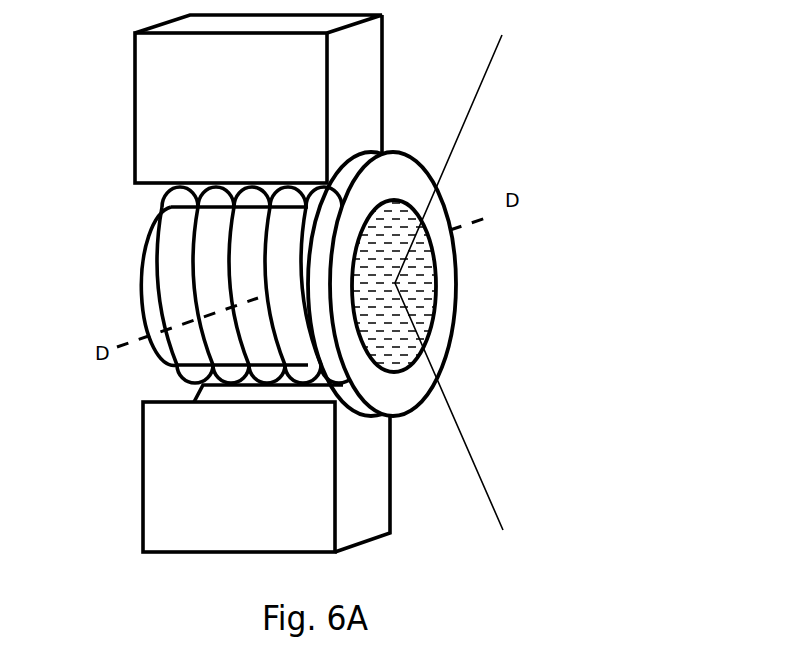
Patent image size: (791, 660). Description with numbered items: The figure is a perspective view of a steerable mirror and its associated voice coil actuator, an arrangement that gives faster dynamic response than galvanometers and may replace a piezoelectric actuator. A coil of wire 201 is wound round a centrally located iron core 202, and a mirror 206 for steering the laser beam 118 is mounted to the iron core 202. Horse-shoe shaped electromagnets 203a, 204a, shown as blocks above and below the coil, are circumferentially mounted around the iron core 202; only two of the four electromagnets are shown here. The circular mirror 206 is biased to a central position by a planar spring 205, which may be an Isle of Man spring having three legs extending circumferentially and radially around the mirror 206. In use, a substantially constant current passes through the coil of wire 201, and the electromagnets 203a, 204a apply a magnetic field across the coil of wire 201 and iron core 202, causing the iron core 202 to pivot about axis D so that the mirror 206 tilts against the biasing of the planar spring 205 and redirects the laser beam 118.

The laser beam 118 is at (493, 60).
The coil of wire 201 is at (177, 370).
The iron core 202 is at (148, 262).
The electromagnet 203a is at (172, 105).
The electromagnet 204a is at (202, 470).
The planar spring 205 is at (400, 180).
The mirror 206 is at (412, 277).